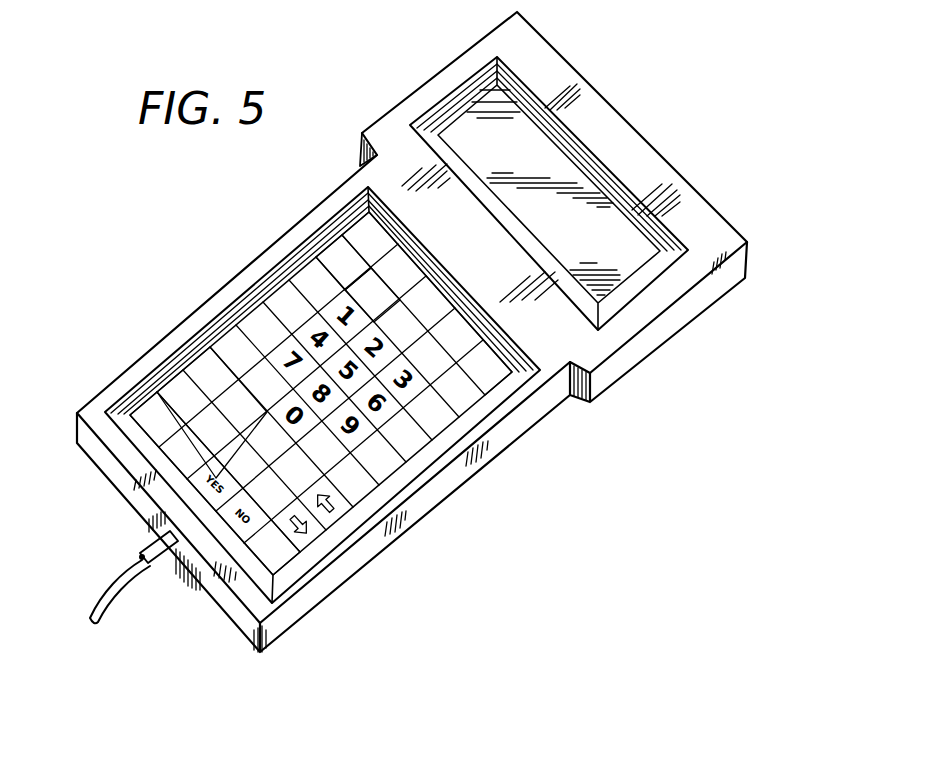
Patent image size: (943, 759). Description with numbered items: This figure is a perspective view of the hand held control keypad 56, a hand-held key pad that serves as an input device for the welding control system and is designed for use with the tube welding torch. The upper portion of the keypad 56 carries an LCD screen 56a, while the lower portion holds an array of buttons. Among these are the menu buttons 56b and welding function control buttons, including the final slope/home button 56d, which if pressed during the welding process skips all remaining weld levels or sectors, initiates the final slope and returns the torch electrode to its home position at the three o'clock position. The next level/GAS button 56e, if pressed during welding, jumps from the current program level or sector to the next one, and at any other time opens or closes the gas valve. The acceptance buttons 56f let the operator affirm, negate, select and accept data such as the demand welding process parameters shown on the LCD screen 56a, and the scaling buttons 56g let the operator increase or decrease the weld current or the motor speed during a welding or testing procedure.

The hand held control keypad 56 is at (660, 114).
The LCD screen 56a is at (590, 234).
The menu buttons 56b is at (472, 325).
The final slope/home button 56d is at (342, 253).
The next level/GAS button 56e is at (358, 288).
The acceptance buttons 56f is at (258, 546).
The scaling buttons 56g is at (205, 425).